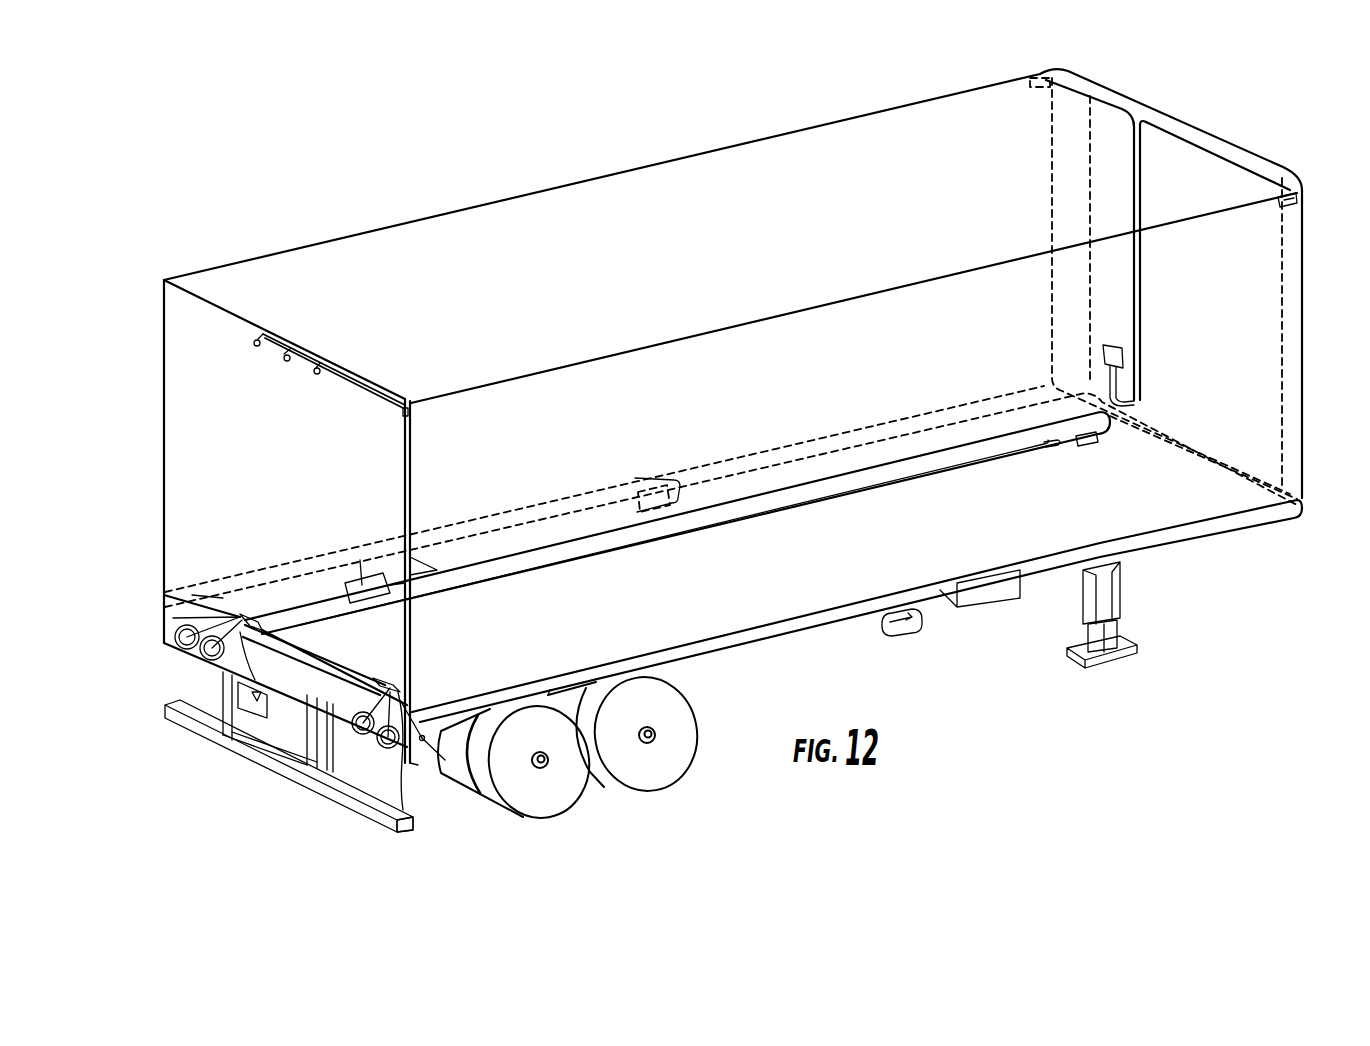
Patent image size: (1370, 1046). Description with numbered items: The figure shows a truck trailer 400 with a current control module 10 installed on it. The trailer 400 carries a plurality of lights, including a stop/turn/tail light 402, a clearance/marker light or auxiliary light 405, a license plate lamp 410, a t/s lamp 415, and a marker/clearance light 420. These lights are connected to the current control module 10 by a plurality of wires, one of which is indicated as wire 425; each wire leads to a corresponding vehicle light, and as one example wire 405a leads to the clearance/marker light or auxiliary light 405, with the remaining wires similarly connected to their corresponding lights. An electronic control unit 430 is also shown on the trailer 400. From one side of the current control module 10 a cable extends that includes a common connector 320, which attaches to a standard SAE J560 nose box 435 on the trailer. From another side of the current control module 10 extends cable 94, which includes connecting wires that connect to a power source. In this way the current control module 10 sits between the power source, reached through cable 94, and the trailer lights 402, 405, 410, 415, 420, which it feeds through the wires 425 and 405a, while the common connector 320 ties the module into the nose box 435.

The trailer 400 is at (633, 150).
The wire 425 is at (1140, 160).
The marker/clearance light 420 is at (1290, 206).
The cable 94 is at (1120, 428).
The current control module 10 is at (1090, 445).
The common connector 320 is at (1058, 446).
The SAE J560 nose box 435 is at (1042, 442).
The electronic control unit 430 is at (365, 585).
The t/s lamp 415 is at (912, 630).
The license plate lamp 410 is at (257, 702).
The stop/turn/tail light 402 is at (383, 745).
The clearance/marker light or auxiliary light 405 is at (422, 742).
The wire 405a is at (410, 825).